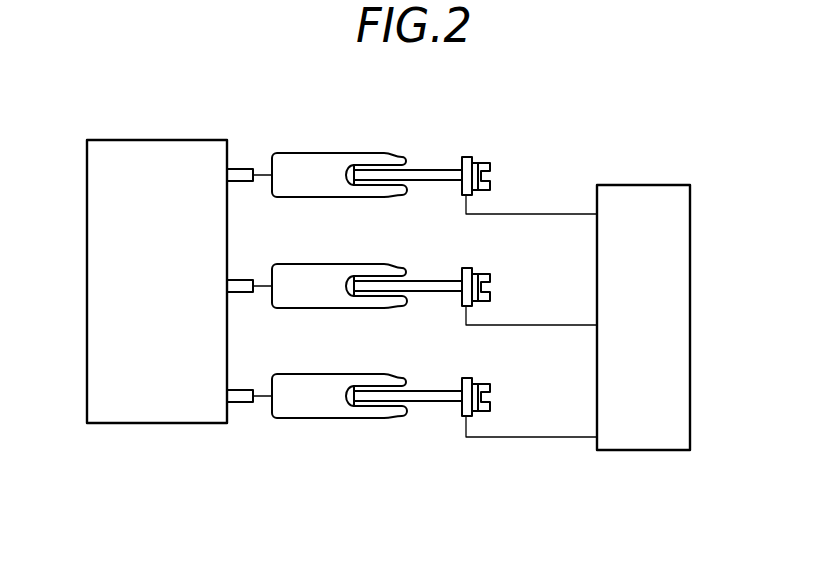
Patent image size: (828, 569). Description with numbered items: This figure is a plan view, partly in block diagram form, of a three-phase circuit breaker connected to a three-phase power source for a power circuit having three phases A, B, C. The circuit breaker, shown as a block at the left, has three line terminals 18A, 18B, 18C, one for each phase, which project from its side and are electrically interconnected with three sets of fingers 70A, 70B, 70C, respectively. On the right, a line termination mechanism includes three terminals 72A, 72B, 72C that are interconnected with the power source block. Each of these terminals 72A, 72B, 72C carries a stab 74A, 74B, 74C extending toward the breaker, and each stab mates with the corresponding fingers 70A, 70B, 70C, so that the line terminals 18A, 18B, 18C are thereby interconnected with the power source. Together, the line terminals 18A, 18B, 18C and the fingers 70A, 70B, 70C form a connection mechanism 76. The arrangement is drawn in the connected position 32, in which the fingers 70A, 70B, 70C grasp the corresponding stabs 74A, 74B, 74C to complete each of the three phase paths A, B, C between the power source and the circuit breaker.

The connected position 32 is at (432, 452).
The connection mechanism 76 is at (316, 134).
The line terminal 18A is at (238, 167).
The line terminal 18B is at (238, 278).
The line terminal 18C is at (238, 388).
The fingers 70A is at (388, 153).
The fingers 70B is at (388, 264).
The fingers 70C is at (388, 374).
The stab 74A is at (406, 170).
The stab 74B is at (406, 281).
The stab 74C is at (406, 391).
The terminal 72A is at (480, 163).
The terminal 72B is at (480, 274).
The terminal 72C is at (480, 384).
The phase A is at (506, 177).
The phase B is at (506, 288).
The phase C is at (506, 398).